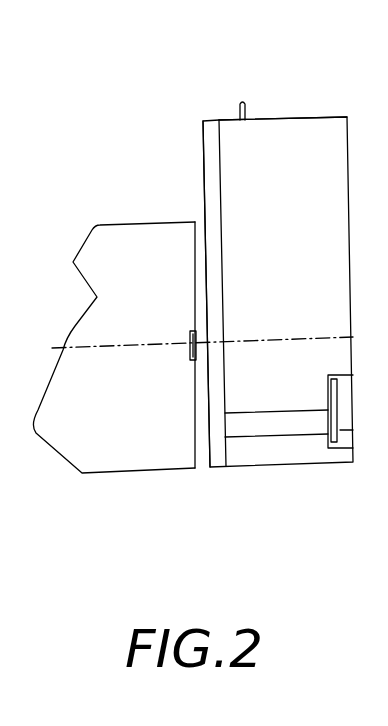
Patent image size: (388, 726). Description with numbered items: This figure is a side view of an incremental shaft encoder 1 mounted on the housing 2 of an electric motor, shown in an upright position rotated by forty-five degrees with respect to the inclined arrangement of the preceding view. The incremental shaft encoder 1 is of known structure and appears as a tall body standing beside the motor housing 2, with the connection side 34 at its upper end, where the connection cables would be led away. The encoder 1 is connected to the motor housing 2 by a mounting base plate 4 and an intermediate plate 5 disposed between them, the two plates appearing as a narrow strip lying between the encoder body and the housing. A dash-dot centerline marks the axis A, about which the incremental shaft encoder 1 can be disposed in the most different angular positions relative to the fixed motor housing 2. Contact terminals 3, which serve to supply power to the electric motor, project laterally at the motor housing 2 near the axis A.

The incremental shaft encoder 1 is at (318, 137).
The housing 2 is at (122, 260).
The contact terminals 3 is at (190, 350).
The mounting base plate 4 is at (212, 130).
The intermediate plate 5 is at (199, 218).
The connection side 34 is at (292, 117).
The axis A is at (262, 340).